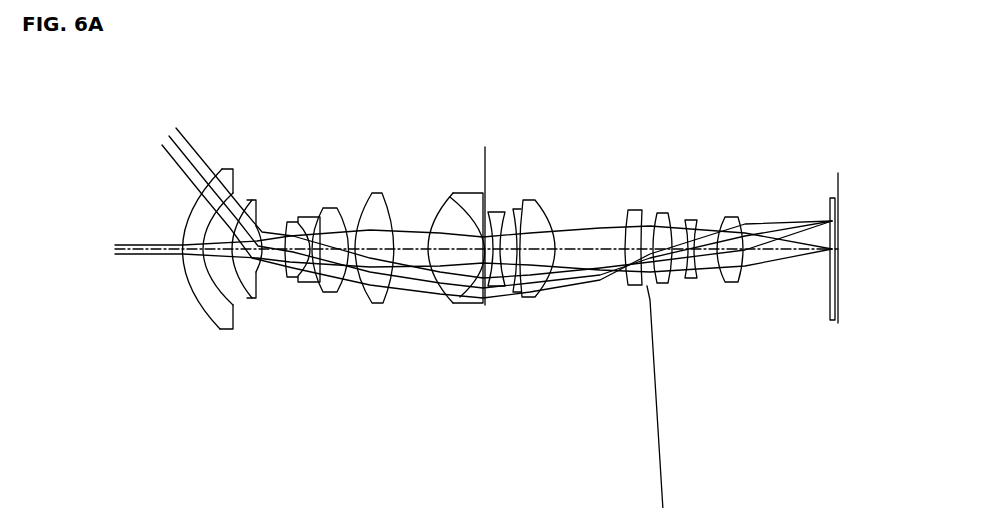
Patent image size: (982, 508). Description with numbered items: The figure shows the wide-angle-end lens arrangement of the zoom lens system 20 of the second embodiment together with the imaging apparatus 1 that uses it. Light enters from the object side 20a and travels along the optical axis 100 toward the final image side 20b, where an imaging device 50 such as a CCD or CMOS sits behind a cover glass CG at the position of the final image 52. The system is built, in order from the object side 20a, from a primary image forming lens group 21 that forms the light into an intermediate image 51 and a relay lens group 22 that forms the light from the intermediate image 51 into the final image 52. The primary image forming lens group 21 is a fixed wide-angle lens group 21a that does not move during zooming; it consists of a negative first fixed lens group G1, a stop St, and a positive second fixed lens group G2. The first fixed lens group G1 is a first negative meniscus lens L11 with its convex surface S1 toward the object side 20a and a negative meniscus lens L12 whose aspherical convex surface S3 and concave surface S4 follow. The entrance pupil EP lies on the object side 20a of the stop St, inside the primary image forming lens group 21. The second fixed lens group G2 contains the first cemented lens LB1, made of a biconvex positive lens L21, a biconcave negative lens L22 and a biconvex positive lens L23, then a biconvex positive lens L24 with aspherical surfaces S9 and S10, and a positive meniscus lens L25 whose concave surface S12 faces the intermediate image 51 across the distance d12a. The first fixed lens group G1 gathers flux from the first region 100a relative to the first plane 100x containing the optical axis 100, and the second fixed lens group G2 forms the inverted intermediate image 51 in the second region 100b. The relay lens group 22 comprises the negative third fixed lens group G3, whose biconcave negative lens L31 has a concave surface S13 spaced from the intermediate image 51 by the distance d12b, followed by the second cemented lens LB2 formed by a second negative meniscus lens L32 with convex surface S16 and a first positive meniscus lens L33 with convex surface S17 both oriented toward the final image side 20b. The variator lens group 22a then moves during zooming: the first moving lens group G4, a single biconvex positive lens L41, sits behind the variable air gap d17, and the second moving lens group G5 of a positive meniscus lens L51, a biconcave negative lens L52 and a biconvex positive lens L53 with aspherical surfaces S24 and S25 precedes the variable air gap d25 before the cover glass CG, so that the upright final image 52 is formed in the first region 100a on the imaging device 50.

The imaging apparatus 1 is at (532, 86).
The zoom lens system 20 is at (261, 133).
The object side 20a is at (102, 156).
The final image side 20b is at (807, 163).
The primary image forming lens group 21 is at (373, 172).
The fixed wide-angle lens group 21a is at (402, 172).
The relay lens group 22 is at (664, 178).
The variator lens group 22a is at (688, 185).
The imaging device 50 is at (839, 190).
The intermediate image 51 is at (456, 196).
The final image 52 is at (839, 230).
The optical axis 100 is at (121, 254).
The first region 100a is at (157, 196).
The second region 100b is at (129, 282).
The first plane 100x is at (122, 246).
The entrance pupil EP is at (242, 243).
The stop St is at (286, 222).
The cover glass CG is at (833, 300).
The first fixed lens group G1 is at (221, 326).
The second fixed lens group G2 is at (381, 338).
The third fixed lens group G3 is at (545, 342).
The first moving lens group G4 is at (632, 359).
The second moving lens group G5 is at (720, 360).
The first cemented lens LB1 is at (336, 328).
The second cemented lens LB2 is at (564, 324).
The first negative meniscus lens L11 is at (196, 291).
The negative meniscus lens L12 is at (242, 307).
The biconvex positive lens L21 is at (292, 283).
The biconcave negative lens L22 is at (311, 284).
The biconvex positive lens L23 is at (336, 294).
The biconvex positive lens L24 is at (401, 303).
The positive meniscus lens L25 is at (449, 303).
The biconcave negative lens L31 is at (500, 313).
The second negative meniscus lens L32 is at (518, 294).
The first positive meniscus lens L33 is at (568, 307).
The biconvex positive lens L41 is at (635, 287).
The positive meniscus lens L51 is at (663, 285).
The biconcave negative lens L52 is at (691, 280).
The biconvex positive lens L53 is at (745, 315).
The convex surface S1 is at (212, 322).
The convex surface S3 is at (227, 300).
The concave surface S4 is at (258, 273).
The convex surface S9 is at (382, 305).
The convex surface S10 is at (410, 296).
The concave surface S12 is at (483, 284).
The concave surface S13 is at (493, 287).
The convex surface S16 is at (535, 290).
The convex surface S17 is at (556, 262).
The aspherical surface S24 is at (716, 283).
The aspherical surface S25 is at (742, 270).
The distance dmia d12a is at (484, 160).
The distance dmib d12b is at (503, 212).
The air gap d17 is at (617, 190).
The air gap d25 is at (793, 252).